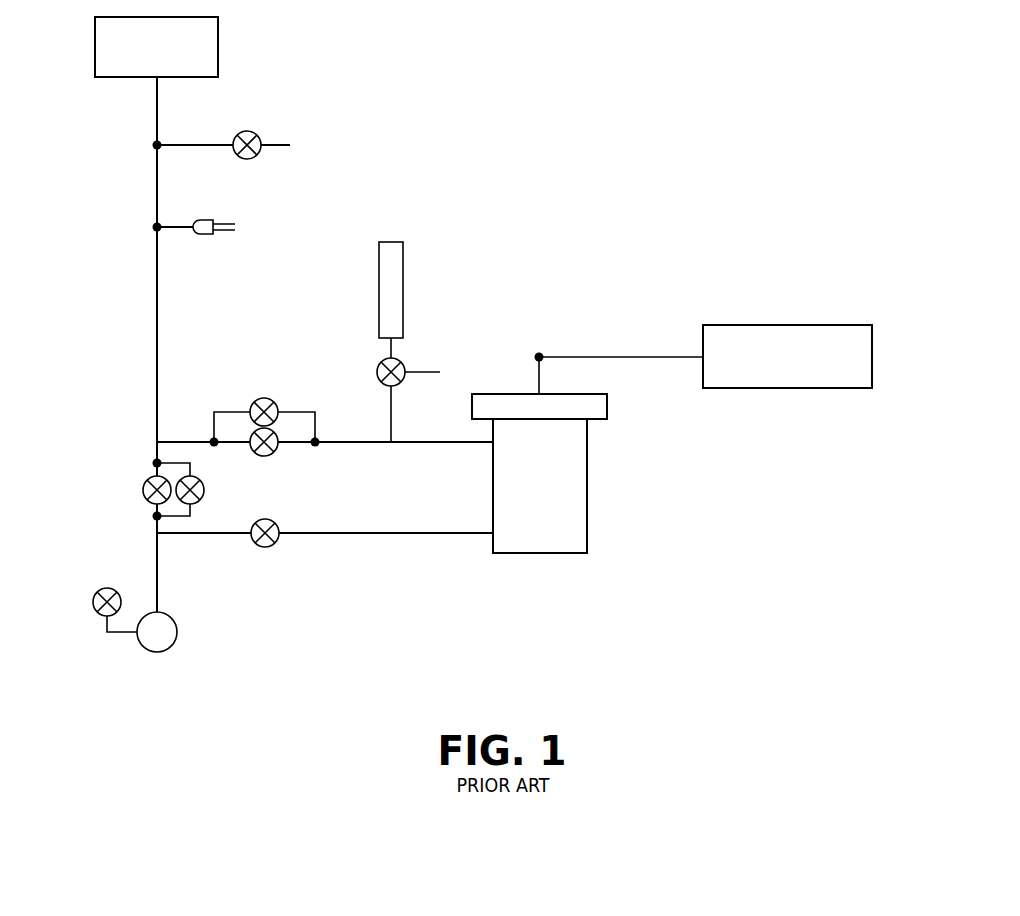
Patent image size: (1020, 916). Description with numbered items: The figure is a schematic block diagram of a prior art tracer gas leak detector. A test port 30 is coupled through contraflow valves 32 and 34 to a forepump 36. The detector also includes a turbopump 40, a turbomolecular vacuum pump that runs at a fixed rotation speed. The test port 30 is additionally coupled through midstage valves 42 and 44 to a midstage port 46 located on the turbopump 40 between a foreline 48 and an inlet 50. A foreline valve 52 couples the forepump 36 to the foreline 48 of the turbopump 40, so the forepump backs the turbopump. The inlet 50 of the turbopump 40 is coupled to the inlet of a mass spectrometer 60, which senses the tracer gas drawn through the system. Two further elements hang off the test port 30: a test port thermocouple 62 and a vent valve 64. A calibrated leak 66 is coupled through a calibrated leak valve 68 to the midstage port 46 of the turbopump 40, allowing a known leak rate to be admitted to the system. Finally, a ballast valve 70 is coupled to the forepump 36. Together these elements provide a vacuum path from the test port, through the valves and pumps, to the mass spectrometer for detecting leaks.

The test port 30 is at (218, 47).
The contraflow valve 32 is at (146, 481).
The contraflow valve 34 is at (202, 480).
The forepump 36 is at (170, 618).
The turbopump 40 is at (493, 489).
The midstage valve 42 is at (274, 451).
The midstage valve 44 is at (273, 403).
The midstage port 46 is at (452, 442).
The foreline 48 is at (493, 536).
The inlet 50 is at (538, 378).
The foreline valve 52 is at (275, 521).
The mass spectrometer 60 is at (768, 337).
The test port thermocouple 62 is at (210, 220).
The vent valve 64 is at (258, 135).
The calibrated leak 66 is at (385, 278).
The calibrated leak valve 68 is at (383, 382).
The ballast valve 70 is at (106, 588).